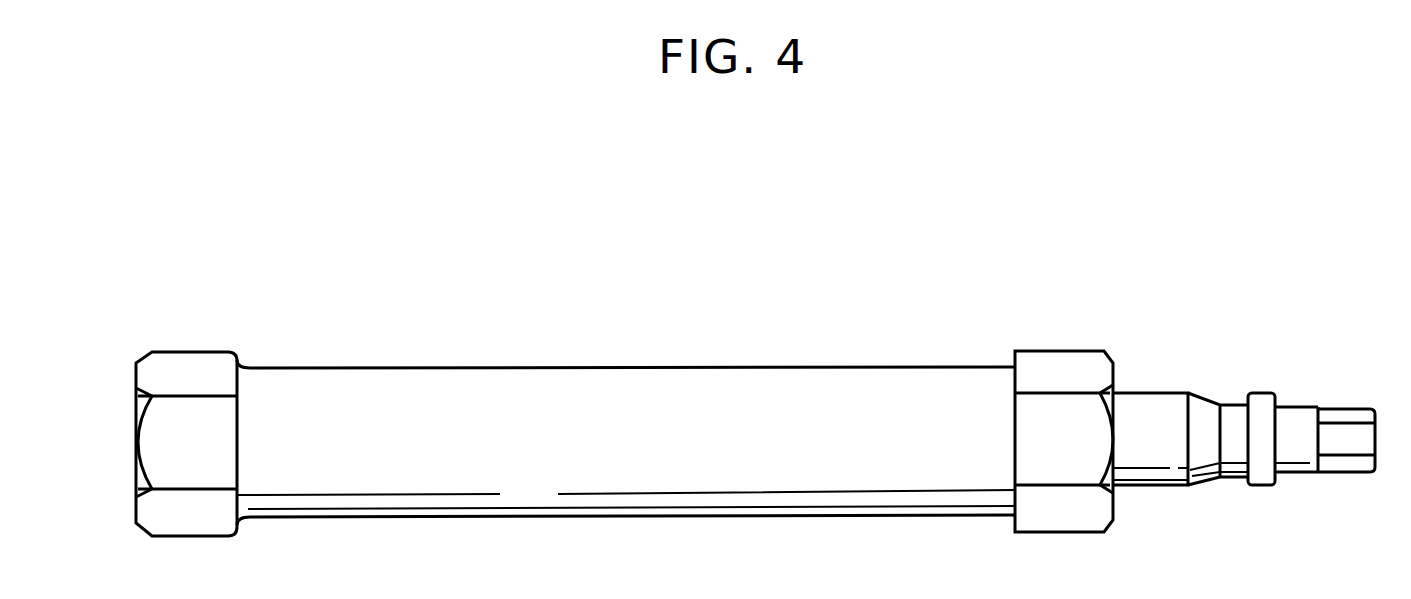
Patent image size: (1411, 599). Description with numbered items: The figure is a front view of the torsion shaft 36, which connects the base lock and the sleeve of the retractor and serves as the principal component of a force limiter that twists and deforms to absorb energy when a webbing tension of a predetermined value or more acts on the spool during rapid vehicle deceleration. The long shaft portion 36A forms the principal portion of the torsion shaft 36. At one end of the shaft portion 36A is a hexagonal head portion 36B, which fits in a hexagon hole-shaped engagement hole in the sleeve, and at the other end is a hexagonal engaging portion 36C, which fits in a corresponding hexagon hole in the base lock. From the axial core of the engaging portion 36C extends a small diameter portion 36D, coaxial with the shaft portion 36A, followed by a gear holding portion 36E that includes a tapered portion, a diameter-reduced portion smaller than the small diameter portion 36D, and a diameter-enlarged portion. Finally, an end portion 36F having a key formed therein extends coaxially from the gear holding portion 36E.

The torsion shaft 36 is at (672, 323).
The shaft portion 36A is at (452, 390).
The hexagonal head portion 36B is at (200, 365).
The hexagonal engaging portion 36C is at (1050, 370).
The small diameter portion 36D is at (1138, 420).
The gear holding portion 36E is at (1198, 412).
The end portion 36F is at (1350, 435).